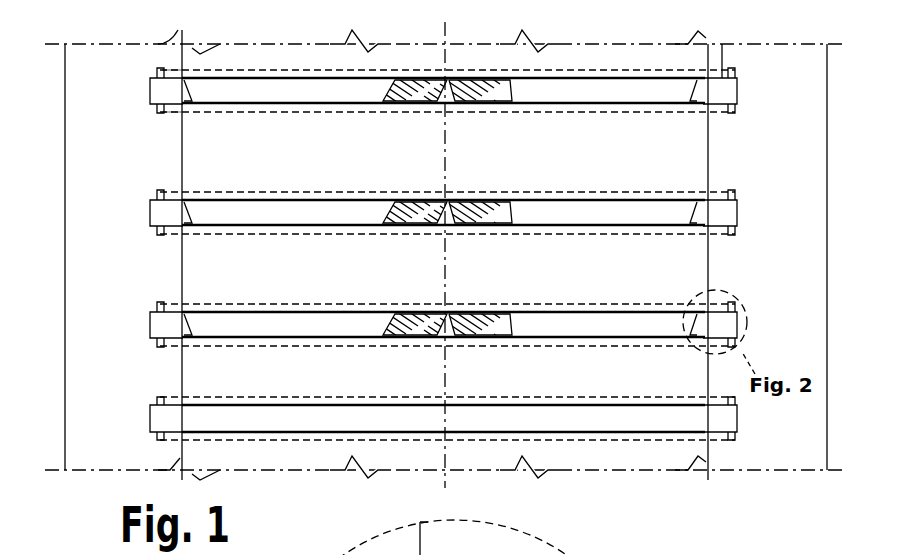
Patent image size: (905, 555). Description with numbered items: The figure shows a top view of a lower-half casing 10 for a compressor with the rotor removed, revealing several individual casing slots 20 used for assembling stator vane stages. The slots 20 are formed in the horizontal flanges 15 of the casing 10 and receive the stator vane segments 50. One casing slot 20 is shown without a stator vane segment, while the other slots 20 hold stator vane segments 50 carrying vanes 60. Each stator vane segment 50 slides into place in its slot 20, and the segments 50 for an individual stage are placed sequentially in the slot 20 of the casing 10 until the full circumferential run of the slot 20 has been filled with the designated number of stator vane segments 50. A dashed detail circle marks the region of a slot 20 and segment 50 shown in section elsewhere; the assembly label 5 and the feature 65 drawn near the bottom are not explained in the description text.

The heat exchanger assembly 5 is at (200, 33).
The frame 10 is at (832, 197).
The side wall 15 is at (100, 410).
The end fitting 20 is at (150, 91).
The bushing 50 is at (715, 52).
The blade element 60 is at (312, 84).
The detail feature 65 is at (550, 540).